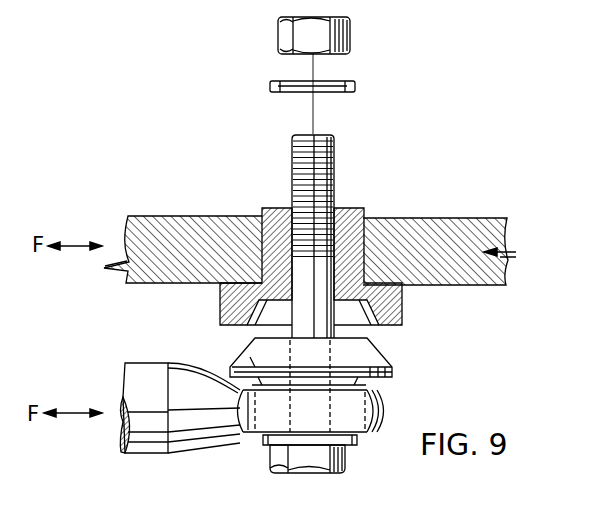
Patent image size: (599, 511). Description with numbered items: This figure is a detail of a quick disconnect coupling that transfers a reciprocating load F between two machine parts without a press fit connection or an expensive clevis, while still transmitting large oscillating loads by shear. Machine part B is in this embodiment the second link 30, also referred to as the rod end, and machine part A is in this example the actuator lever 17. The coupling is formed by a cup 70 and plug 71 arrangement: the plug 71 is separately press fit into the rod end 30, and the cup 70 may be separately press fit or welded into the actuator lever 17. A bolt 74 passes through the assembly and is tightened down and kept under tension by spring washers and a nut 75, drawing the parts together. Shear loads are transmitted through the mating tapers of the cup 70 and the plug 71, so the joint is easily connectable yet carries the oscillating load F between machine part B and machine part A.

The nut 75 is at (350, 46).
The bolt 74 is at (332, 176).
The actuator lever 17 is at (425, 232).
The cup 70 is at (374, 327).
The plug 71 is at (383, 357).
The second link 30 is at (148, 378).
The machine part A is at (183, 235).
The machine part B is at (377, 436).